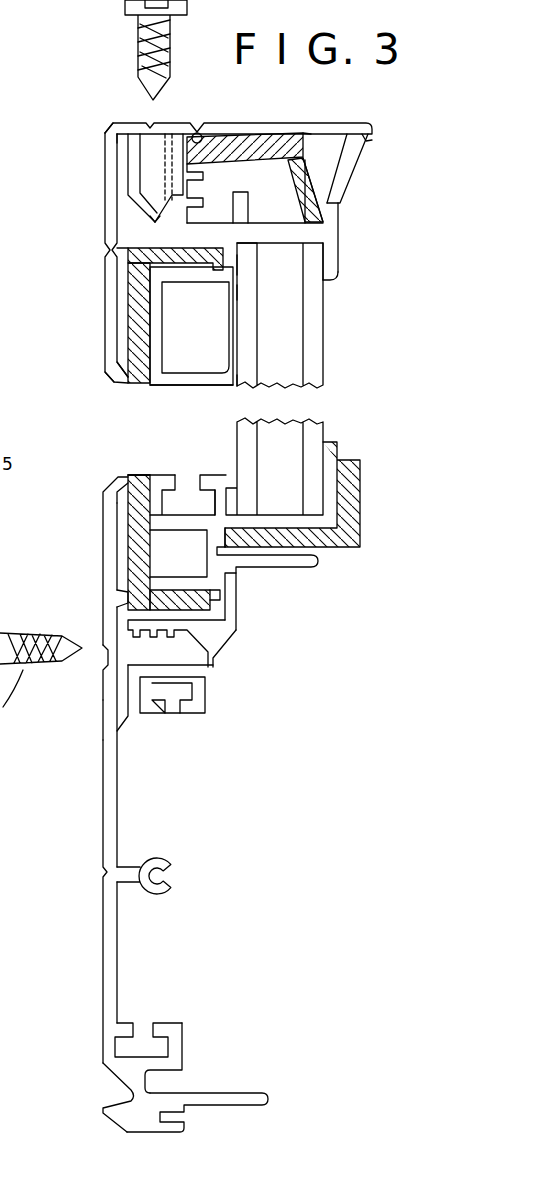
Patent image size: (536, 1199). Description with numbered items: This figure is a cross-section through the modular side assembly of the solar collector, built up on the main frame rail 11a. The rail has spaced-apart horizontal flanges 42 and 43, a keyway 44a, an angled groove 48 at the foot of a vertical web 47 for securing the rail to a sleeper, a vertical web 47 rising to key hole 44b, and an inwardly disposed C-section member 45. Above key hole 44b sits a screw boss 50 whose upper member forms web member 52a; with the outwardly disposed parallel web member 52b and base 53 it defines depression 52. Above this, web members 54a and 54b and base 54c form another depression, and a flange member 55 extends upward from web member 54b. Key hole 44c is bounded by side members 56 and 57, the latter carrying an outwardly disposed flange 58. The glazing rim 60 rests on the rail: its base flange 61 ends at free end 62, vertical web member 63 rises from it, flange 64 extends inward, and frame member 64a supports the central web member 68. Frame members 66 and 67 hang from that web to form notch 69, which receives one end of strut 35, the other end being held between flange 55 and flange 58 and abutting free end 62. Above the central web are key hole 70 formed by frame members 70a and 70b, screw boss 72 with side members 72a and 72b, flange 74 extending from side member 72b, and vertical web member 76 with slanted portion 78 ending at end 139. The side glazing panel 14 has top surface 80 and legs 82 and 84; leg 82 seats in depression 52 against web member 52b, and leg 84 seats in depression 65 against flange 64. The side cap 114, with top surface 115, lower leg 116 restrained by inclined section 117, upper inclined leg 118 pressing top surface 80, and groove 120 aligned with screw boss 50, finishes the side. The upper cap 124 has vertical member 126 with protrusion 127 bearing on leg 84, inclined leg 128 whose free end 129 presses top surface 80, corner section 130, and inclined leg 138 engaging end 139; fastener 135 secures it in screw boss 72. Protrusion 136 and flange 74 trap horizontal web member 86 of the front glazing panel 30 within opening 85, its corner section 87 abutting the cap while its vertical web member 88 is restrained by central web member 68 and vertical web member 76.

The fastener 135 is at (140, 35).
The side member 72a is at (133, 143).
The screw boss 72 is at (158, 148).
The side member 72b is at (180, 157).
The glazing rim 60 is at (100, 164).
The corner section 130 is at (110, 135).
The protrusion 136 is at (203, 123).
The inclined leg 138 is at (372, 127).
The end of slanted member 139 is at (366, 137).
The horizontal web member 86 is at (306, 133).
The corner section 87 is at (311, 132).
The front glazing panel 30 is at (346, 125).
The slanted portion 78 is at (353, 163).
The opening 85 is at (292, 165).
The vertical web member 88 is at (315, 195).
The vertical web member 76 is at (317, 232).
The central web member 68 is at (333, 215).
The frame member 67 is at (338, 270).
The notch 69 is at (315, 275).
The strut 35 is at (323, 341).
The flange 74 is at (197, 172).
The key hole 70 is at (218, 215).
The frame member 70a is at (150, 218).
The frame member 70b is at (247, 215).
The upper cap 124 is at (105, 195).
The protrusion 127 is at (105, 250).
The leg 84 is at (153, 257).
The vertical member 126 is at (108, 323).
The inclined leg 128 is at (118, 370).
The free end 129 is at (115, 385).
The flange 64 is at (195, 273).
The vertical web member 63 is at (157, 335).
The flange 61 is at (185, 378).
The frame member 64a is at (235, 252).
The depression 65 is at (233, 263).
The frame member 66 is at (237, 292).
The free end 62 is at (236, 392).
The flange 58 is at (233, 480).
The side member 56 is at (220, 500).
The key hole 44c is at (190, 497).
The side member 57 is at (157, 487).
The side glazing panel 14 is at (135, 528).
The top surface 80 is at (138, 512).
The base 54c is at (207, 547).
The base 53 is at (203, 600).
The leg 82 is at (213, 603).
The flange member 55 is at (338, 448).
The web member 54b is at (328, 520).
The web member 54a is at (315, 563).
The web member 52b is at (203, 583).
The depression 52 is at (225, 622).
The web member 52a is at (217, 637).
The screw boss 50 is at (190, 653).
The key hole 44b is at (170, 697).
The inclined section 117 is at (127, 723).
The side cap 114 is at (100, 555).
The top surface 115 is at (103, 582).
The upper inclined leg 118 is at (117, 488).
The groove 120 is at (107, 648).
The lower leg 116 is at (110, 708).
The vertical web 47 is at (105, 793).
The C-section member 45 is at (157, 858).
The main frame rail 11a is at (101, 958).
The keyway 44a is at (142, 1042).
The horizontal flange 43 is at (172, 1065).
The horizontal flange 42 is at (245, 1097).
The angled groove 48 is at (113, 1086).